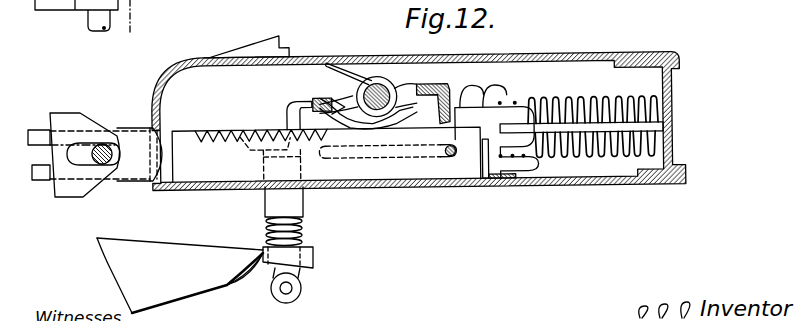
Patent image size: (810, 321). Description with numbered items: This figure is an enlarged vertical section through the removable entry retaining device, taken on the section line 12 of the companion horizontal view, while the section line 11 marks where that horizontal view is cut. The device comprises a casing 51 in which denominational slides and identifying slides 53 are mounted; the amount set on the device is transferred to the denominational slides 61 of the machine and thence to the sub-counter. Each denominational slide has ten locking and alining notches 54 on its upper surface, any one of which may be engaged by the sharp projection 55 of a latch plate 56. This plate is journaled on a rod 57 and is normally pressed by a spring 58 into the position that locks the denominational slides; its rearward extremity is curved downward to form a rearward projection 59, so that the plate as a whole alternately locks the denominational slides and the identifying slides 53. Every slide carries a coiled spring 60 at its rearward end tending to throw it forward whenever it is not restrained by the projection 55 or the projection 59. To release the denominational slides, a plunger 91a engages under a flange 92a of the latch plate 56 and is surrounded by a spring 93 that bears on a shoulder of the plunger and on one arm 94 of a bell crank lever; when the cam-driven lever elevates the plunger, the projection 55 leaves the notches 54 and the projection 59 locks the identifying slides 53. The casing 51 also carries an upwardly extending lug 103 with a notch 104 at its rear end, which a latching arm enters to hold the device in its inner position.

The section line 11- 11 is at (162, 67).
The section line 12- 12 is at (130, 37).
The casing 51 is at (533, 55).
The identifying slide 53 is at (344, 154).
The locking and alining notches 54 is at (214, 131).
The sharp projection 55 is at (332, 101).
The latch plate 56 is at (312, 103).
The rod 57 is at (372, 67).
The spring 58 is at (337, 60).
The rearward projection 59 is at (472, 86).
The coiled spring 60 is at (596, 93).
The denominational slide 61 is at (138, 172).
The plunger 91a is at (298, 207).
The flange 92a is at (284, 129).
The spring 93 is at (303, 243).
The bell crank lever arm 94 is at (307, 270).
The lug 103 is at (247, 53).
The notch 104 is at (292, 22).